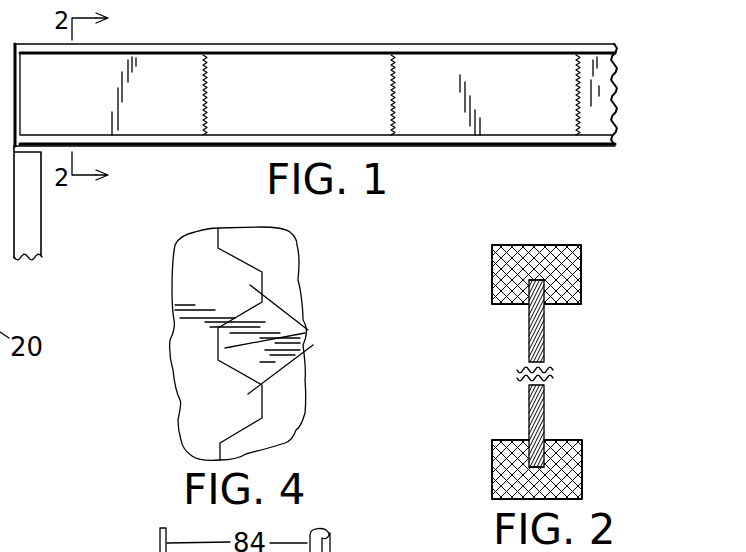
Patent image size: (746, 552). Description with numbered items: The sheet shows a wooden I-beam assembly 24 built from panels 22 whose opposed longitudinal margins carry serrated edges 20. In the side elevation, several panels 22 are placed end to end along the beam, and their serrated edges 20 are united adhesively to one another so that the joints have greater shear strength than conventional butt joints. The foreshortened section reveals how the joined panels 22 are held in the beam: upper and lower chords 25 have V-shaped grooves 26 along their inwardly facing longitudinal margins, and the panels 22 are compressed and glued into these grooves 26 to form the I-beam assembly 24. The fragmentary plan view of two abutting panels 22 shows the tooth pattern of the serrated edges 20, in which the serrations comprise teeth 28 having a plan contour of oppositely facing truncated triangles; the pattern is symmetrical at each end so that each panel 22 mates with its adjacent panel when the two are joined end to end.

In FIG. 1, the serrated edges 20 is at (380, 85).
In FIG. 1, the panels 22 is at (173, 122).
In FIG. 4, the panels 22 is at (238, 330).
In FIG. 2, the panels 22 is at (527, 388).
In FIG. 1, the wooden I-beam assembly 24 is at (156, 162).
In FIG. 2, the wooden I-beam assembly 24 is at (497, 349).
In FIG. 1, the upper and lower chords 25 is at (434, 53).
In FIG. 2, the upper and lower chords 25 is at (497, 262).
In FIG. 2, the V-shaped grooves 26 is at (540, 288).
In FIG. 4, the teeth 28 is at (281, 344).